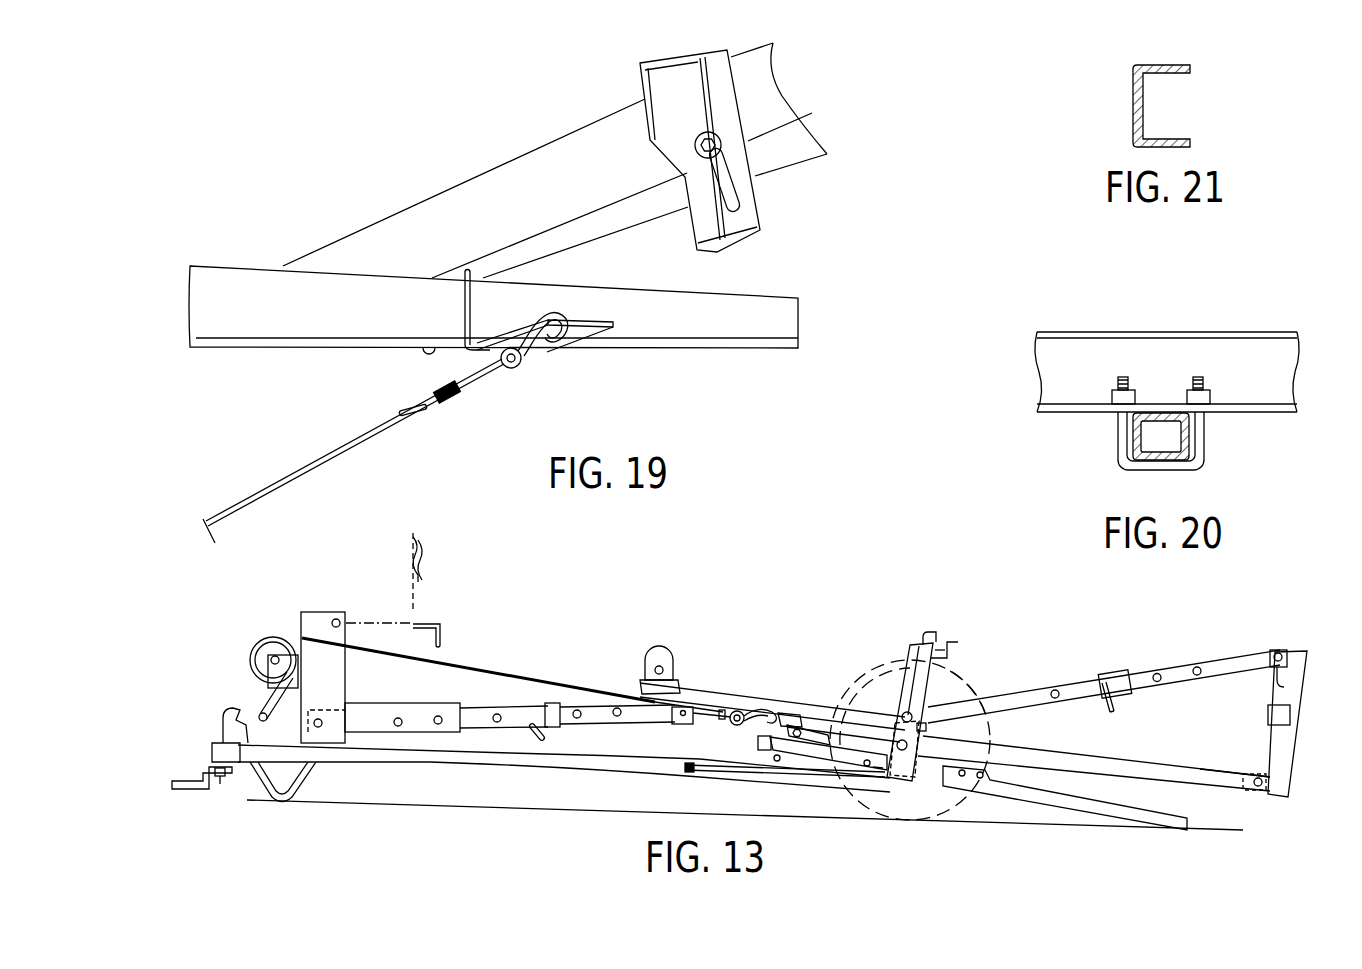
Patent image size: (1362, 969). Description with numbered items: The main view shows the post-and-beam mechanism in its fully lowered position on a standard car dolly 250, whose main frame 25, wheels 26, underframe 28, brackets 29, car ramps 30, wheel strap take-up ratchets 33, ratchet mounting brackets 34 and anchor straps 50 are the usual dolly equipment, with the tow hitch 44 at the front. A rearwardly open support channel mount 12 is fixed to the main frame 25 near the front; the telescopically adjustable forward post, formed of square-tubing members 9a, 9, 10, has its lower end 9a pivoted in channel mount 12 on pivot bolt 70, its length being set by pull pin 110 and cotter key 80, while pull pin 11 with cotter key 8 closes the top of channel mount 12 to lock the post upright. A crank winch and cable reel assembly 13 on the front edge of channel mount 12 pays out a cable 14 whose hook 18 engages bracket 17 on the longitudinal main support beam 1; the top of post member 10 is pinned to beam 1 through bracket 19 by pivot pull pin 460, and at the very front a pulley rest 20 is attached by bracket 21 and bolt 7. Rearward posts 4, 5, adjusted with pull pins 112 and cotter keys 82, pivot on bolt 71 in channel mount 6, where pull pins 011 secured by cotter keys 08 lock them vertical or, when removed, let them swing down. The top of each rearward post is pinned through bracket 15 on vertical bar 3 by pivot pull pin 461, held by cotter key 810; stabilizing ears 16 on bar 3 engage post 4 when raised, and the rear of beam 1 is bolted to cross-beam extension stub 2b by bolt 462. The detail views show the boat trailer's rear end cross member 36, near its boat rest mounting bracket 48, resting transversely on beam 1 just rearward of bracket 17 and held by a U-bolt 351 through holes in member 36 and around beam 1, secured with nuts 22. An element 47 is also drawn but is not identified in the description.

In FIG. 19, the longitudinal main support beam 1 is at (706, 348).
In FIG. 20, the longitudinal main support beam 1 is at (1152, 463).
In FIG. 13, the longitudinal main support beam 1 is at (1100, 762).
In FIG. 13, the cross-beam extension stub 2b is at (1240, 766).
In FIG. 13, the vertical bar 3 is at (1298, 705).
In FIG. 13, the rearward post 4 is at (1167, 667).
In FIG. 13, the rearward post 5 is at (1028, 688).
In FIG. 13, the channel mount 6 is at (915, 646).
In FIG. 13, the bolt 7 is at (651, 672).
In FIG. 13, the cotter key 8 is at (416, 536).
In FIG. 13, the forward post member 9 is at (490, 708).
In FIG. 13, the forward post lower end 9a is at (408, 703).
In FIG. 13, the forward post member 10 is at (605, 722).
In FIG. 13, the pull pin 11 is at (438, 623).
In FIG. 13, the support channel mount 12 is at (315, 612).
In FIG. 13, the crank winch and cable reel assembly 13 is at (275, 640).
In FIG. 19, the cable 14 is at (333, 469).
In FIG. 13, the cable 14 is at (528, 680).
In FIG. 13, the bracket 15 is at (1284, 650).
In FIG. 13, the stabilizing ear 16 is at (1290, 718).
In FIG. 19, the bracket 17 is at (608, 330).
In FIG. 13, the bracket 17 is at (788, 714).
In FIG. 19, the hook 18 is at (552, 350).
In FIG. 13, the hook 18 is at (768, 708).
In FIG. 13, the bracket 19 is at (680, 725).
In FIG. 19, the pulley rest 20 is at (481, 421).
In FIG. 13, the pulley rest 20 is at (660, 656).
In FIG. 20, the bracket 21 is at (1247, 472).
In FIG. 13, the bracket 21 is at (677, 682).
In FIG. 20, the nuts 22 is at (1133, 378).
In FIG. 13, the main frame 25 is at (652, 775).
In FIG. 13, the wheels 26 is at (975, 675).
In FIG. 13, the underframe 28 is at (890, 815).
In FIG. 13, the brackets 29 is at (875, 672).
In FIG. 13, the car ramps 30 is at (1070, 813).
In FIG. 13, the wheel strap take-up ratchets 33 is at (792, 742).
In FIG. 13, the ratchet mounting brackets 34 is at (812, 748).
In FIG. 19, the rear end cross member 36 is at (395, 214).
In FIG. 20, the rear end cross member 36 is at (1090, 331).
In FIG. 21, the rear end cross member 36 is at (1137, 102).
In FIG. 13, the tow hitch 44 is at (200, 790).
In FIG. 13, the rail 47 is at (490, 808).
In FIG. 19, the boat rest mounting bracket 48 is at (764, 219).
In FIG. 13, the anchor straps 50 is at (764, 750).
In FIG. 13, the pivot bolt 70 is at (322, 729).
In FIG. 13, the pivot bolt 71 is at (900, 714).
In FIG. 13, the cotter key 80 is at (530, 740).
In FIG. 13, the cotter keys 82 is at (1108, 670).
In FIG. 13, the cotter keys 08 is at (930, 637).
In FIG. 13, the pull pins 011 is at (950, 645).
In FIG. 13, the pull pin 110 is at (552, 705).
In FIG. 13, the pull pins 112 is at (1112, 710).
In FIG. 13, the car dolly 250 is at (403, 778).
In FIG. 19, the U-bolt 351 is at (426, 356).
In FIG. 20, the U-bolt 351 is at (1118, 436).
In FIG. 13, the pivot pull pin 460 is at (700, 724).
In FIG. 13, the pivot pull pin 461 is at (1270, 652).
In FIG. 13, the bolt 462 is at (1258, 788).
In FIG. 13, the cotter key 810 is at (1275, 684).